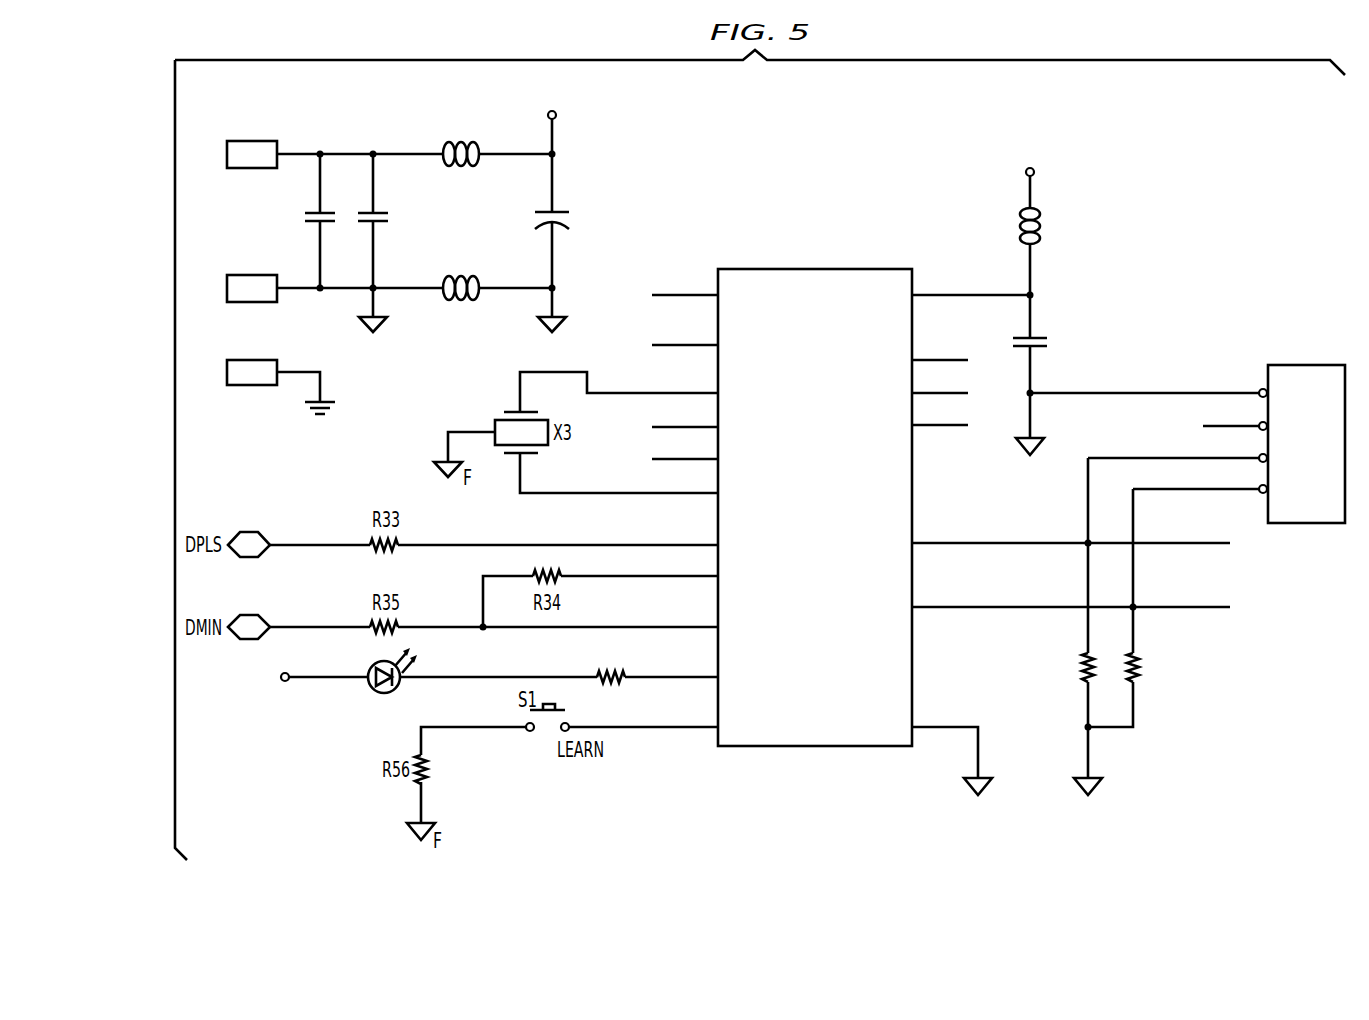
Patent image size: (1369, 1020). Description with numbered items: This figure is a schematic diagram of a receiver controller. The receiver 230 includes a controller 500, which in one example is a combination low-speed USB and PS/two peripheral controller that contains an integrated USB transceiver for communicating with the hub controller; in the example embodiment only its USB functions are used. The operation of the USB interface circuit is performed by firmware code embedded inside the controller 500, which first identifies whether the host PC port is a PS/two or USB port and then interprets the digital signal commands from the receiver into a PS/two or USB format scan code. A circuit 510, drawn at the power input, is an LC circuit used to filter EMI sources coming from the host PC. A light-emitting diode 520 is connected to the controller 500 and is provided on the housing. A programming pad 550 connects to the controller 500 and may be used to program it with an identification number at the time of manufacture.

The circuit 510 is at (488, 114).
The controller 500 is at (856, 269).
The receiver 230 is at (1117, 243).
The programming pad 550 is at (1298, 365).
The light-emitting diode (LED) 520 is at (371, 703).